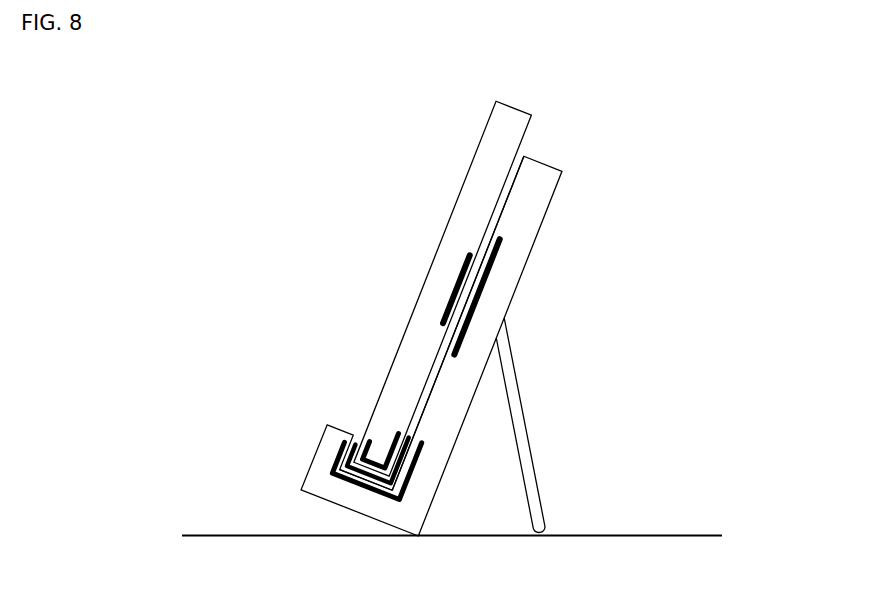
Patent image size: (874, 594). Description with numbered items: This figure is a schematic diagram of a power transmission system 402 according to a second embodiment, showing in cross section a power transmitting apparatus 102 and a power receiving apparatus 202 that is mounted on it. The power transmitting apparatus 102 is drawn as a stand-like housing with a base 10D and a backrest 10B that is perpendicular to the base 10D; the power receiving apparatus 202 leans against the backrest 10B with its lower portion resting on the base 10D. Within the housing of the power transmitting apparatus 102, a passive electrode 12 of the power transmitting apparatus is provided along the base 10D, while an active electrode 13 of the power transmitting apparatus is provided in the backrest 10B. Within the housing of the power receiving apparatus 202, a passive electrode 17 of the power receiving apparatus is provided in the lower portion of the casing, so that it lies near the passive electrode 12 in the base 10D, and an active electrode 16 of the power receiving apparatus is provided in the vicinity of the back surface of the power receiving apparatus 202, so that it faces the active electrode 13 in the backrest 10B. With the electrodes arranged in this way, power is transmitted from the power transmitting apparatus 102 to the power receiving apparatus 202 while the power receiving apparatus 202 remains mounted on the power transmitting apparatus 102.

The power transmission system 402 is at (776, 138).
The power receiving apparatus 202 is at (478, 100).
The power transmitting apparatus 102 is at (572, 187).
The backrest 10B is at (514, 199).
The base 10D is at (362, 497).
The passive electrode of the power transmitting apparatus 12 is at (417, 459).
The active electrode of the power transmitting apparatus 13 is at (489, 278).
The active electrode of the power receiving apparatus 16 is at (455, 289).
The passive electrode of the power receiving apparatus 17 is at (395, 432).